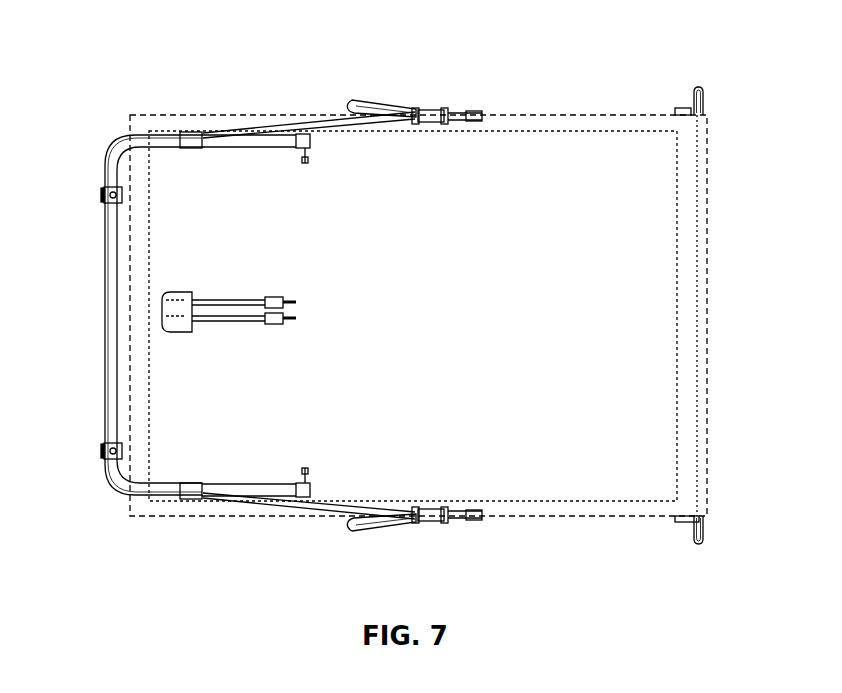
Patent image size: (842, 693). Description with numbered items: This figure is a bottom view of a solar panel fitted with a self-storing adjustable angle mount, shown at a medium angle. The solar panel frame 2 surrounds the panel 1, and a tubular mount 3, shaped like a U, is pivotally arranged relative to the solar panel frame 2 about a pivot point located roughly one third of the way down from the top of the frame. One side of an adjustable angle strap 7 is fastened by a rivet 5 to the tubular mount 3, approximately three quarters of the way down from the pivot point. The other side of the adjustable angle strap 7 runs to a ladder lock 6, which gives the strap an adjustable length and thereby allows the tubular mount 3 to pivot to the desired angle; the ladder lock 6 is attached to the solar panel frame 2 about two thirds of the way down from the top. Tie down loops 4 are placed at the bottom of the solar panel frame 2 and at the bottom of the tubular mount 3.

The panel 1 is at (652, 223).
The solar panel frame 2 is at (710, 280).
The tubular mount 3 is at (100, 322).
The tie down loops 4 is at (100, 200).
The rivet 5 is at (190, 127).
The ladder lock 6 is at (425, 104).
The adjustable angle strap 7 is at (368, 100).